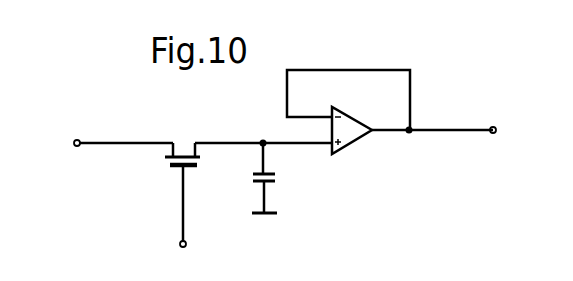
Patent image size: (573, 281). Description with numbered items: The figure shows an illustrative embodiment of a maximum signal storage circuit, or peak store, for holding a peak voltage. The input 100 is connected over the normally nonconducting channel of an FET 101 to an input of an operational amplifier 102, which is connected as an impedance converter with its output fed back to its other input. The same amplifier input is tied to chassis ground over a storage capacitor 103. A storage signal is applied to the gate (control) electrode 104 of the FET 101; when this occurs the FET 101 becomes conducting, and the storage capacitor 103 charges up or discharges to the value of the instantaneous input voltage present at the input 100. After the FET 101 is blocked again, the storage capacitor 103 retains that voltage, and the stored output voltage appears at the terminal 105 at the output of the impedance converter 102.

The input 100 is at (77, 140).
The FET 101 is at (170, 158).
The operational amplifier 102 is at (352, 131).
The storage capacitor 103 is at (271, 176).
The gate (control) electrode 104 is at (187, 243).
The terminal 105 is at (495, 126).